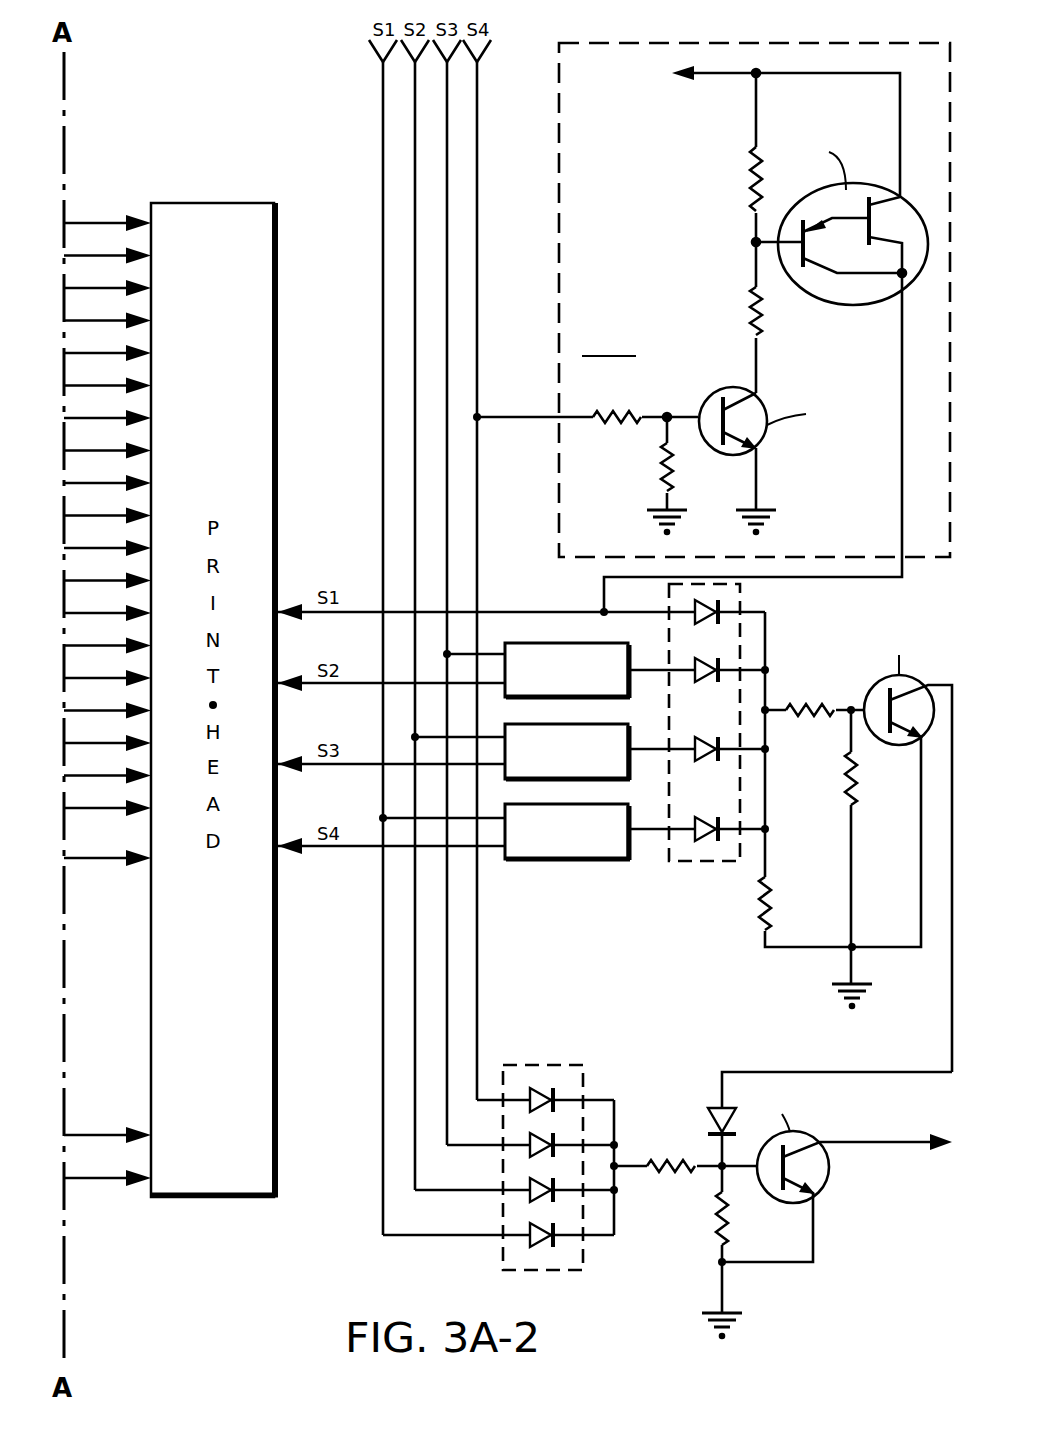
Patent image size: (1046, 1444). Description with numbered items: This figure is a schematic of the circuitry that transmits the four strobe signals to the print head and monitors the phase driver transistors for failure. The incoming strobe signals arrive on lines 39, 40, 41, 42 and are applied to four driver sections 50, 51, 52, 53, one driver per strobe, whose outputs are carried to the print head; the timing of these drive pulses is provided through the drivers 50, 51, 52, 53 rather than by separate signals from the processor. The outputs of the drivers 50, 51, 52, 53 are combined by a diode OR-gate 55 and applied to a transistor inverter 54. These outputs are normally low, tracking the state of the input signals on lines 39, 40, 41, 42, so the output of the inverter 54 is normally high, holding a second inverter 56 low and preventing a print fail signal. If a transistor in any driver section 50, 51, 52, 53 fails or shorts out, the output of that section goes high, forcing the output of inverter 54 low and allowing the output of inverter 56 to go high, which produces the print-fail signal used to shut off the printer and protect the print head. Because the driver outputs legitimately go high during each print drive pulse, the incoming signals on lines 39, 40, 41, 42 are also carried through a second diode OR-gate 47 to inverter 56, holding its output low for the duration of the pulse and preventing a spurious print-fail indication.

The line 39 is at (383, 115).
The line 40 is at (415, 163).
The line 41 is at (447, 215).
The line 42 is at (477, 272).
The diode OR-gate 47 is at (532, 1065).
The driver 50 is at (723, 43).
The driver 51 is at (563, 643).
The driver 52 is at (605, 727).
The driver 53 is at (578, 858).
The A2J transistor inverter 54 is at (870, 696).
The diode OR-gate 55 is at (686, 861).
The A2J inverter 56 is at (826, 1182).